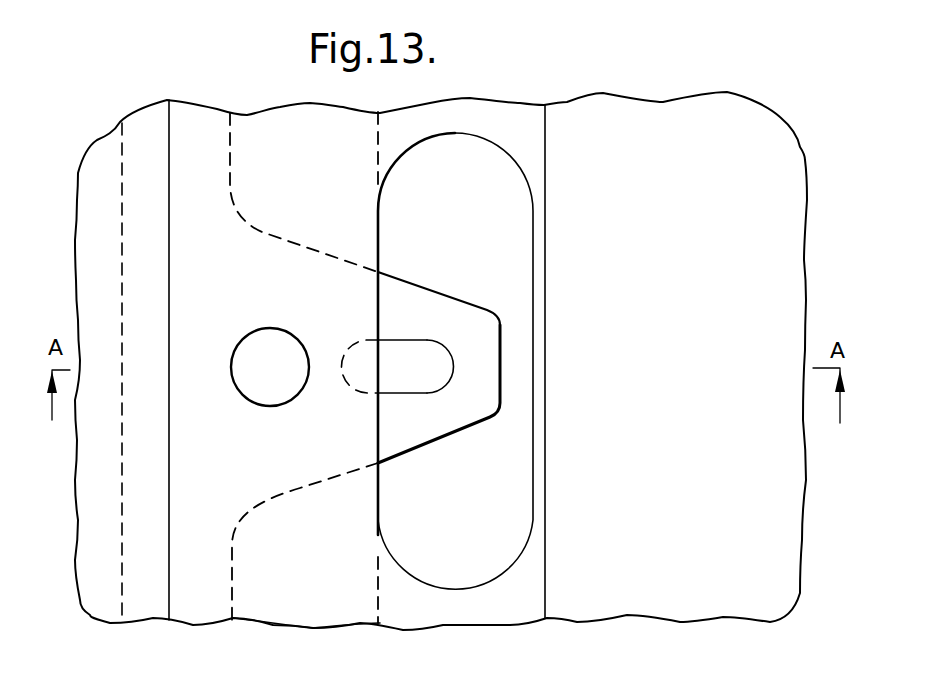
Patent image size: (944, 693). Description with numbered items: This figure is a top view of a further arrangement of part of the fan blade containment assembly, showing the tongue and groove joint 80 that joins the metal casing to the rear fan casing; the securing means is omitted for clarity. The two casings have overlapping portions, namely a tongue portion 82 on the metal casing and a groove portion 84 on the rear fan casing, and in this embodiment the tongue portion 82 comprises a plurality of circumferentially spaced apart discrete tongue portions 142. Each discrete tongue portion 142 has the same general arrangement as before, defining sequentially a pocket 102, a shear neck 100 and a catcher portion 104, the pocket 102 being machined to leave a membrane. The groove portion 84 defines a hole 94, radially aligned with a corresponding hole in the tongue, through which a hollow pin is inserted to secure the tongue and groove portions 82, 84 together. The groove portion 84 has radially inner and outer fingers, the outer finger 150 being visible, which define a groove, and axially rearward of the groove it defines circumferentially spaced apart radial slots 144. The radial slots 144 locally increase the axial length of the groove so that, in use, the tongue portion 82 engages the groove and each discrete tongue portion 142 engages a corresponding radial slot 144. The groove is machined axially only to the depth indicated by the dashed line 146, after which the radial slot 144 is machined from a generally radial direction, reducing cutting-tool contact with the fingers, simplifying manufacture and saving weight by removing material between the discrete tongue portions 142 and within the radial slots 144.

The tongue and groove joint 80 is at (538, 130).
The tongue portion 82 is at (143, 592).
The groove portion 84 is at (645, 96).
The hole 94 is at (268, 398).
The shear neck 100 is at (333, 376).
The pocket 102 is at (453, 368).
The catcher portion 104 is at (487, 375).
The discrete tongue portions 142 is at (422, 287).
The radial slots 144 is at (526, 555).
The dashed line 146 is at (375, 578).
The outer finger 150 is at (312, 597).